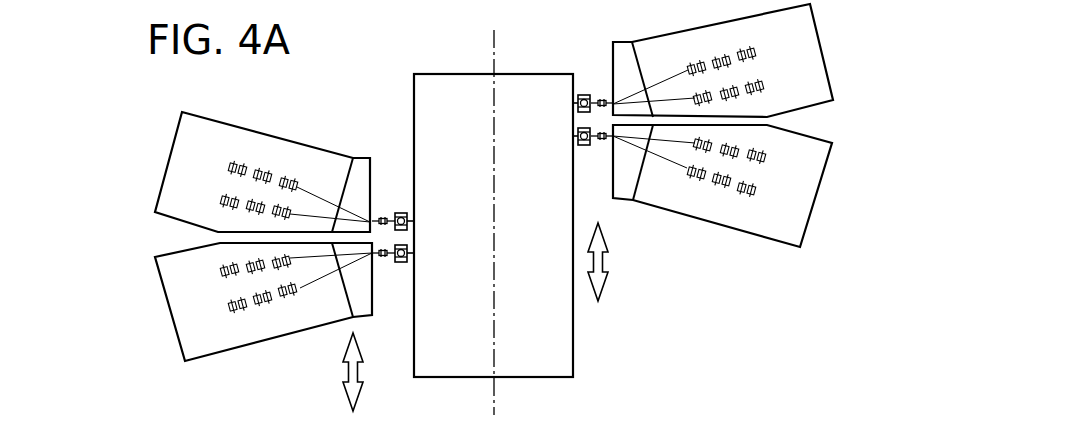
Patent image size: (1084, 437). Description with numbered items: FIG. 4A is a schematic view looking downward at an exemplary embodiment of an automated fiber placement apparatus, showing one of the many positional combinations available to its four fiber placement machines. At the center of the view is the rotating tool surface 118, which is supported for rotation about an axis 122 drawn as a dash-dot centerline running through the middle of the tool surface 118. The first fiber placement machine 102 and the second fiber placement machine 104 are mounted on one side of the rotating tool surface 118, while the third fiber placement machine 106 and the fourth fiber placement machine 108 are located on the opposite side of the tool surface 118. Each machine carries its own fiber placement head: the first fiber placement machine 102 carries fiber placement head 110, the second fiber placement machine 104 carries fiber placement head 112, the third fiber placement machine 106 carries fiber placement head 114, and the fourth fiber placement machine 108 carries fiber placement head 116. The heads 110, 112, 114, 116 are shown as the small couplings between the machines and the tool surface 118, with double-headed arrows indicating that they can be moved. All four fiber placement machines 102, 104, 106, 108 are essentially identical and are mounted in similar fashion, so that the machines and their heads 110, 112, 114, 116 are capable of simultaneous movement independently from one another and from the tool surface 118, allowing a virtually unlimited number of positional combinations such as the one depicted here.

The first fiber placement machine 102 is at (807, 185).
The second fiber placement machine 104 is at (803, 55).
The third fiber placement machine 106 is at (181, 305).
The fourth fiber placement machine 108 is at (183, 170).
The fiber placement head 110 is at (593, 144).
The fiber placement head 112 is at (596, 98).
The fiber placement head 114 is at (390, 262).
The fiber placement head 116 is at (392, 212).
The rotating tool surface 118 is at (573, 345).
The axis 122 is at (494, 403).